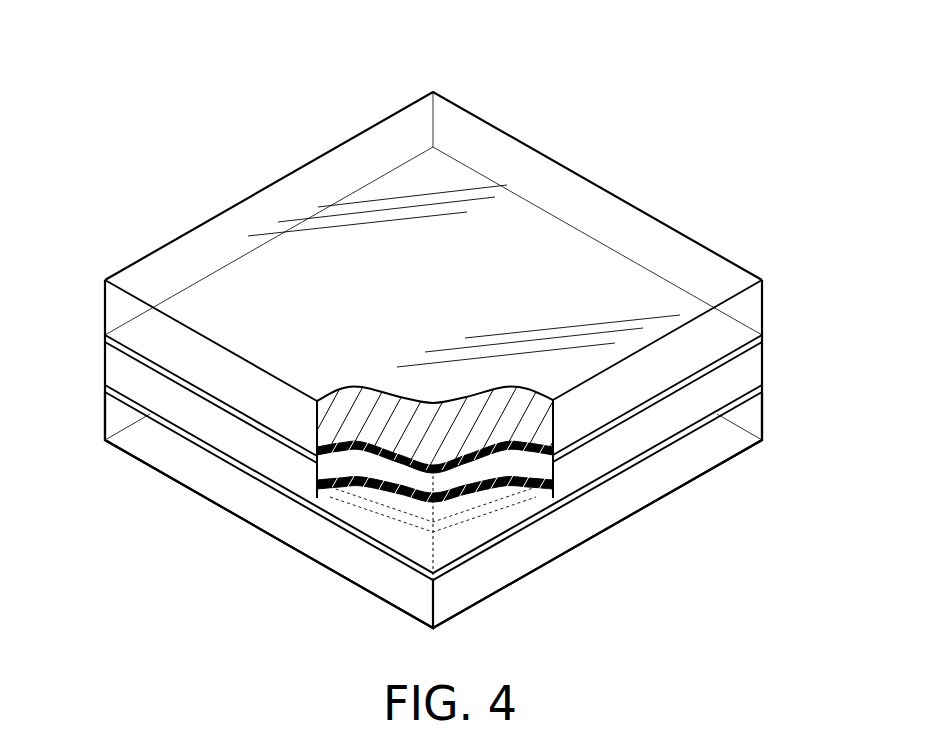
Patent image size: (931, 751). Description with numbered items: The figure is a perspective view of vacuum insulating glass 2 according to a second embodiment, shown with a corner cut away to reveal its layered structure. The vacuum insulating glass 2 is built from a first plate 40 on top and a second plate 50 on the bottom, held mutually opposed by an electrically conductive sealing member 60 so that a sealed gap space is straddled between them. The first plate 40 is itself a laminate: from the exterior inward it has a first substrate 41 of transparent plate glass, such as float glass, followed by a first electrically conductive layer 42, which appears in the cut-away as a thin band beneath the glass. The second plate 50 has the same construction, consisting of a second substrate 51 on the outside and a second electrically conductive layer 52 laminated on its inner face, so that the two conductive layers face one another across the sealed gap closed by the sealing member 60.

The vacuum insulating glass 2 is at (273, 130).
The first plate 40 is at (593, 186).
The first substrate 41 is at (764, 316).
The first electrically conductive layer 42 is at (104, 337).
The electrically conductive sealing member 60 is at (765, 363).
The second electrically conductive layer 52 is at (104, 387).
The second substrate 51 is at (764, 423).
The second plate 50 is at (597, 539).